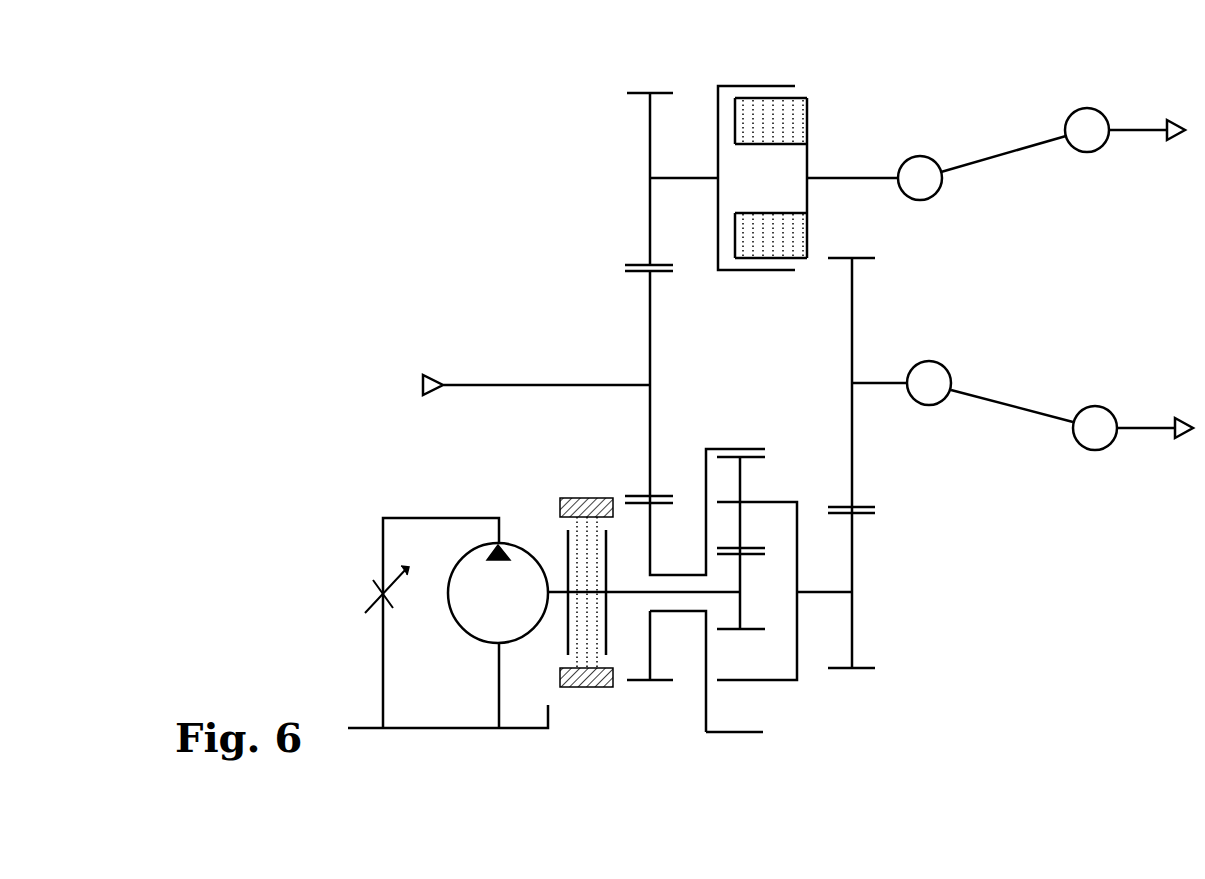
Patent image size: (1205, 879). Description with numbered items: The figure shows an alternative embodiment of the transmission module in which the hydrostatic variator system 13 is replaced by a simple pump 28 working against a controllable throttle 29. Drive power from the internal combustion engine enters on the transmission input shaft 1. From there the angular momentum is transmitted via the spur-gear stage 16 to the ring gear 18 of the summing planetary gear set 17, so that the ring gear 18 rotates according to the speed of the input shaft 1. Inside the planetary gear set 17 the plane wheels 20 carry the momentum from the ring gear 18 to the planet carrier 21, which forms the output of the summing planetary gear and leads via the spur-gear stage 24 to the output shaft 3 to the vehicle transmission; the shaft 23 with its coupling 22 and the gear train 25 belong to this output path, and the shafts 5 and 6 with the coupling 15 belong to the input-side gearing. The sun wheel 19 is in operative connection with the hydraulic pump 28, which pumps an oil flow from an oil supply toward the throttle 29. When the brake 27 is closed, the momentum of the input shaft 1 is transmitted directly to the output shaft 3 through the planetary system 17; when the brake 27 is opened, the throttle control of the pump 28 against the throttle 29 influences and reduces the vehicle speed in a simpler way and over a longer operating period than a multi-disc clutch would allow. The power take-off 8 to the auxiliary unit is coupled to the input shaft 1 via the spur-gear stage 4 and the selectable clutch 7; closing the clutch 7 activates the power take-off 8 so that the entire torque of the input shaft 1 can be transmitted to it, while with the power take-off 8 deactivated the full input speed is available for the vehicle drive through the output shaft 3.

The transmission input shaft 1 is at (500, 382).
The output shaft 3 is at (880, 378).
The spur-gear stage 4 is at (614, 268).
The shaft 5 is at (648, 310).
The shaft 6 is at (648, 170).
The clutch 7 is at (770, 250).
The power take-off 8 is at (1133, 120).
The variator system 13 is at (410, 512).
The clutch 15 is at (650, 686).
The spur-gear stage 16 is at (624, 492).
The summing planetary gear set 17 is at (737, 744).
The ring gear 18 is at (703, 710).
The sun wheel 19 is at (745, 634).
The plane wheels 20 is at (738, 478).
The planet carrier 21 is at (798, 564).
The brake 22 is at (856, 622).
The shaft 23 is at (856, 470).
The spur-gear stage 24 is at (848, 680).
The output gear train 25 is at (1046, 394).
The brake 27 is at (590, 648).
The pump 28 is at (503, 543).
The throttle 29 is at (378, 595).